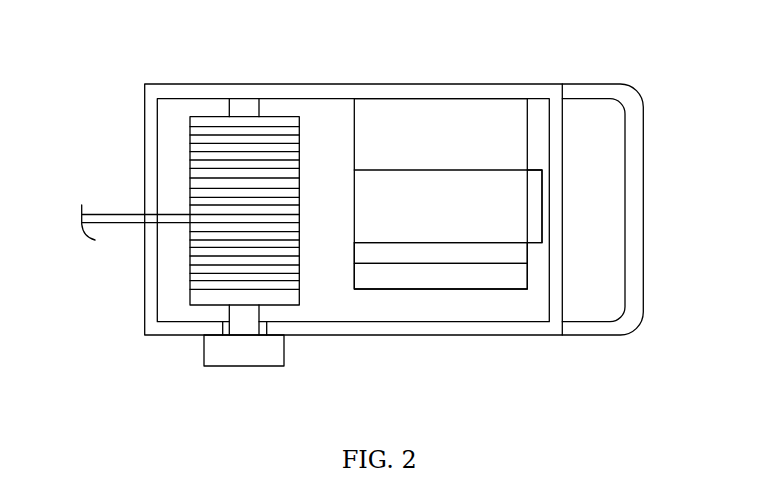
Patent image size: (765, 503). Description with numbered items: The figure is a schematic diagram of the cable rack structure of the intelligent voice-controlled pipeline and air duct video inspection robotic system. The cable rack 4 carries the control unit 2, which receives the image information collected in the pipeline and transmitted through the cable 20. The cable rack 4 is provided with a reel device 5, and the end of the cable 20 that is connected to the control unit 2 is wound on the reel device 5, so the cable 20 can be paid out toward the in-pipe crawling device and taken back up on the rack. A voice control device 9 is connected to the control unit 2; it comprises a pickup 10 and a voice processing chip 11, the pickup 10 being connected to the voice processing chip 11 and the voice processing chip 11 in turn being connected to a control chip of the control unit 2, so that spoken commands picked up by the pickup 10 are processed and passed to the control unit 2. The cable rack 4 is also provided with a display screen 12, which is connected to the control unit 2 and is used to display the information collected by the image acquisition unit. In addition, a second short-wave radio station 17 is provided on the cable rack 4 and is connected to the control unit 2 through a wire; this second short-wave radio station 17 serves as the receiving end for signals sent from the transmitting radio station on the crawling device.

The control unit 2 is at (408, 188).
The cable rack 4 is at (328, 120).
The reel device 5 is at (216, 297).
The voice control device 9 is at (440, 333).
The pickup 10 is at (445, 271).
The voice processing chip 11 is at (496, 253).
The display screen 12 is at (442, 119).
The second short-wave radio station 17 is at (537, 201).
The cable 20 is at (117, 218).